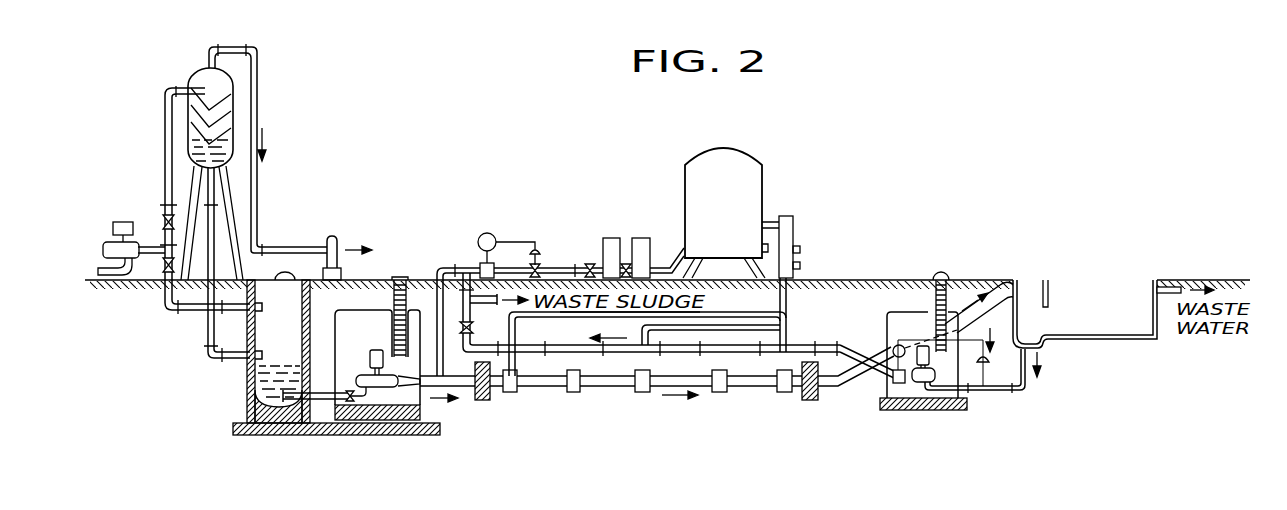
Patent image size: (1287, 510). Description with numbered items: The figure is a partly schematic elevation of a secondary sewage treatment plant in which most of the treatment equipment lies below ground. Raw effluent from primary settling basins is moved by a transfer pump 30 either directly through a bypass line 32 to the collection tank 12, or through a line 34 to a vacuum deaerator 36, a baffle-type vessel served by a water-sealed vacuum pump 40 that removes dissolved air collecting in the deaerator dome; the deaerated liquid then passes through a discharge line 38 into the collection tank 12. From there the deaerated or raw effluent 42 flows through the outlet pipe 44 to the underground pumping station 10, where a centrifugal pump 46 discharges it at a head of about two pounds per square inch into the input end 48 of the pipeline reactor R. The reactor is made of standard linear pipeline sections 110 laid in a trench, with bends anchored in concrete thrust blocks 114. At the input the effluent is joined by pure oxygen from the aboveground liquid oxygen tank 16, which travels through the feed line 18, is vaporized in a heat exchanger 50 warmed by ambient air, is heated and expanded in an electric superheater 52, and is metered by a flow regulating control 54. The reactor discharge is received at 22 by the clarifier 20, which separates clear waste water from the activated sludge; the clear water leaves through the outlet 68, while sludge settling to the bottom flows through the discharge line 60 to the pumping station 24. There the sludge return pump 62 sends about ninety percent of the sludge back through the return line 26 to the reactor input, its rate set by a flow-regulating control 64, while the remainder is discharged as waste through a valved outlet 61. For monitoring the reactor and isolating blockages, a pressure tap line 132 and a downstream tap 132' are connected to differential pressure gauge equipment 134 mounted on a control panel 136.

The pumping station 10 is at (361, 308).
The collection tank 12 is at (247, 387).
The tank of liquid oxygen 16 is at (737, 212).
The feed line 18 is at (566, 268).
The clarifier 20 is at (1133, 347).
The reactor discharge 22 is at (1003, 285).
The pumping station 24 is at (911, 311).
The return line 26 is at (476, 347).
The transfer pump 30 is at (130, 272).
The bypass line 32 is at (187, 312).
The line 34 is at (165, 160).
The vacuum deaerator 36 is at (191, 82).
The discharge line 38 is at (214, 237).
The vacuum pump 40 is at (328, 240).
The effluent 42 is at (257, 384).
The outlet pipe 44 is at (330, 400).
The centrifugal pump 46 is at (393, 388).
The input end 48 is at (423, 387).
The heat exchanger 50 is at (645, 238).
The electric superheater 52 is at (612, 238).
The flow regulating control 54 is at (488, 233).
The discharge line 60 is at (1008, 391).
The valved outlet 61 is at (463, 293).
The sludge return pump 62 is at (893, 410).
The flow-regulating control 64 is at (895, 346).
The outlet 68 is at (1170, 286).
The linear pipeline section 110 is at (750, 388).
The concrete thrust block 114 is at (490, 398).
The pressure tap line 132 is at (647, 344).
The downstream tap 132' is at (659, 301).
The differential pressure gauge equipment 134 is at (801, 250).
The control panel 136 is at (787, 216).
The pipeline reactor R is at (622, 391).